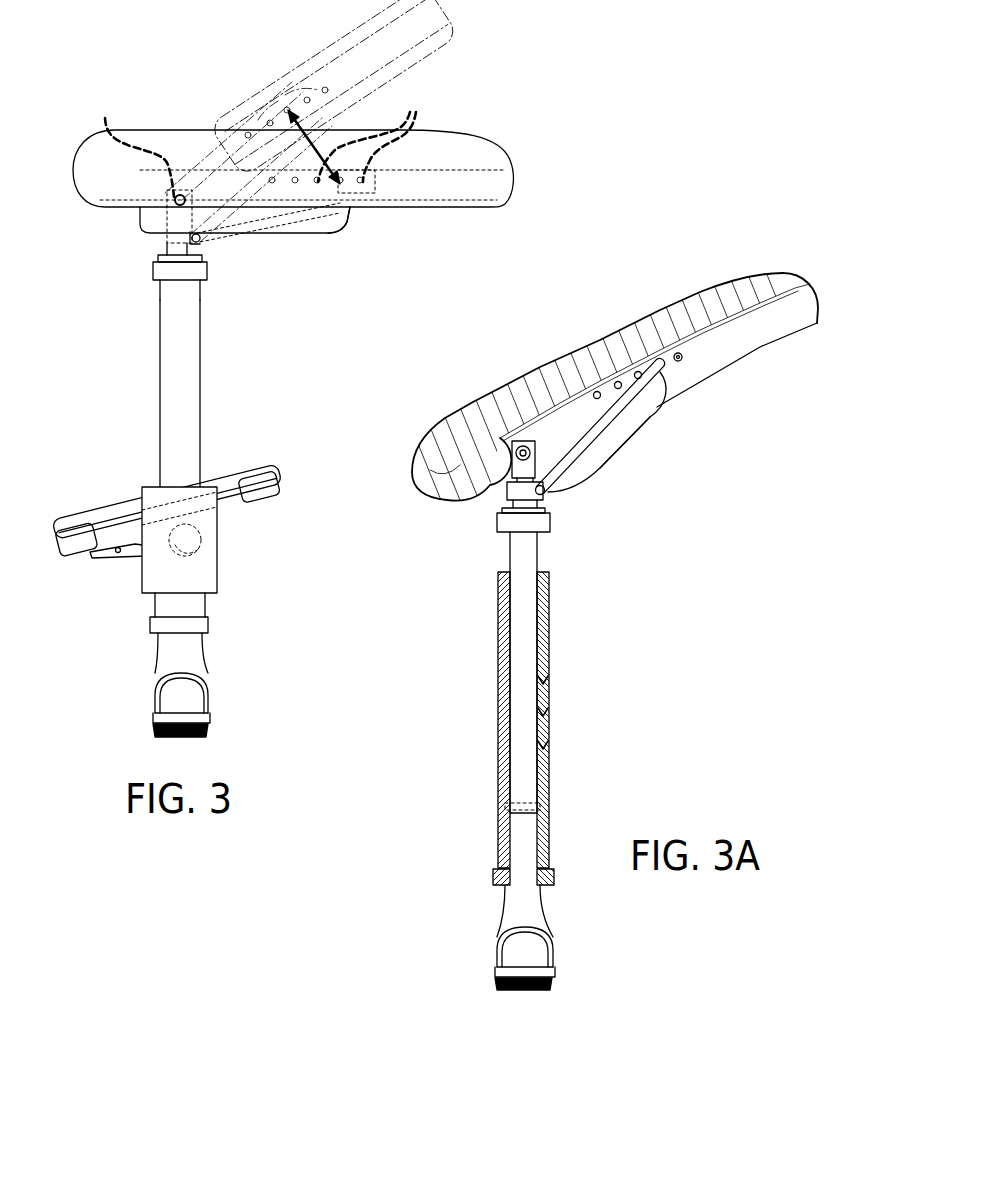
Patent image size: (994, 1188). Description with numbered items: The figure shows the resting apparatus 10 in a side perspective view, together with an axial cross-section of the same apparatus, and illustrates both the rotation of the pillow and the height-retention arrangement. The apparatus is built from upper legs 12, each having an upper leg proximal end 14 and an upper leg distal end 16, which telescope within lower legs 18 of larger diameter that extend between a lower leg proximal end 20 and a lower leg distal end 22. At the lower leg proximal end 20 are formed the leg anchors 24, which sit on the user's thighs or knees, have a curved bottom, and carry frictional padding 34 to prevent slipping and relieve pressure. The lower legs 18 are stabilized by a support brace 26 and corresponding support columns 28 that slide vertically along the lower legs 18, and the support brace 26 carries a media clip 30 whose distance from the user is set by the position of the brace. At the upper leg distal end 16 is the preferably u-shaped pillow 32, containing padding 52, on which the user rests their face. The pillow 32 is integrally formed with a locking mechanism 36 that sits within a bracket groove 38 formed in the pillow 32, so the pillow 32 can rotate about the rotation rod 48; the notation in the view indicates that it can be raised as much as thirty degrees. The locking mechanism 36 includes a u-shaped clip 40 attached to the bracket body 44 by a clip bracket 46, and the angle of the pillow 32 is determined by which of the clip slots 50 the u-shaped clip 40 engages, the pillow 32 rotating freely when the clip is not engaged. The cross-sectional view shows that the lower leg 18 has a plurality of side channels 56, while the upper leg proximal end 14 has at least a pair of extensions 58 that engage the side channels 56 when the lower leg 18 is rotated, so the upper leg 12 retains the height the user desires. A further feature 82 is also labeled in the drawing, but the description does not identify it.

In FIG. 3, the resting apparatus 10 is at (183, 73).
In FIG. 3A, the resting apparatus 10 is at (725, 579).
In FIG. 3, the upper legs 12 is at (178, 258).
In FIG. 3A, the upper legs 12 is at (508, 555).
In FIG. 3A, the upper leg proximal end 14 is at (522, 815).
In FIG. 3, the upper leg distal end 16 is at (200, 258).
In FIG. 3A, the upper leg distal end 16 is at (508, 497).
In FIG. 3, the lower legs 18 is at (203, 412).
In FIG. 3A, the lower legs 18 is at (550, 605).
In FIG. 3, the lower leg proximal end 20 is at (205, 624).
In FIG. 3, the lower leg distal end 22 is at (173, 276).
In FIG. 3A, the lower leg distal end 22 is at (542, 525).
In FIG. 3, the leg anchors 24 is at (208, 707).
In FIG. 3A, the leg anchors 24 is at (505, 942).
In FIG. 3, the support brace 26 is at (185, 540).
In FIG. 3, the support columns 28 is at (148, 578).
In FIG. 3, the media clip 30 is at (270, 488).
In FIG. 3, the pillow 32 is at (487, 142).
In FIG. 3A, the pillow 32 is at (470, 405).
In FIG. 3, the frictional padding 34 is at (170, 735).
In FIG. 3A, the frictional padding 34 is at (540, 990).
In FIG. 3, the locking mechanism 36 is at (310, 215).
In FIG. 3A, the locking mechanism 36 is at (652, 412).
In FIG. 3, the bracket groove 38 is at (462, 188).
In FIG. 3A, the bracket groove 38 is at (760, 342).
In FIG. 3, the u-shaped clip 40 is at (270, 215).
In FIG. 3A, the u-shaped clip 40 is at (585, 445).
In FIG. 3, the bracket body 44 is at (312, 220).
In FIG. 3A, the bracket body 44 is at (632, 434).
In FIG. 3, the clip bracket 46 is at (203, 238).
In FIG. 3A, the clip bracket 46 is at (548, 490).
In FIG. 3, the rotation rod 48 is at (176, 201).
In FIG. 3A, the rotation rod 48 is at (529, 454).
In FIG. 3, the clip slots 50 is at (347, 139).
In FIG. 3A, the clip slots 50 is at (662, 374).
In FIG. 3A, the padding 52 is at (593, 355).
In FIG. 3A, the side channels 56 is at (549, 680).
In FIG. 3A, the extensions 58 is at (548, 810).
In FIG. 3, the cable 82 is at (135, 141).
In FIG. 3A, the cable 82 is at (450, 440).